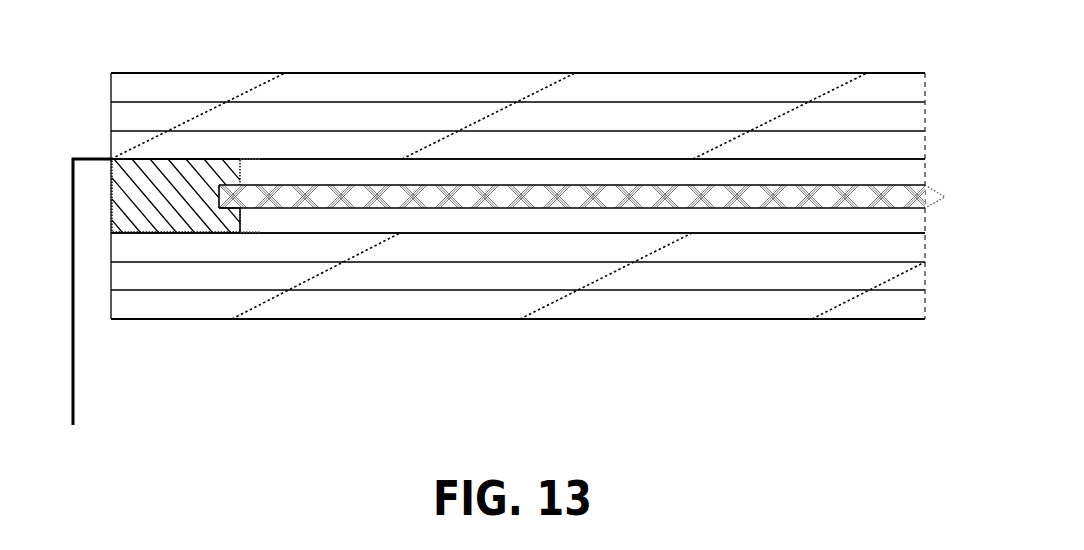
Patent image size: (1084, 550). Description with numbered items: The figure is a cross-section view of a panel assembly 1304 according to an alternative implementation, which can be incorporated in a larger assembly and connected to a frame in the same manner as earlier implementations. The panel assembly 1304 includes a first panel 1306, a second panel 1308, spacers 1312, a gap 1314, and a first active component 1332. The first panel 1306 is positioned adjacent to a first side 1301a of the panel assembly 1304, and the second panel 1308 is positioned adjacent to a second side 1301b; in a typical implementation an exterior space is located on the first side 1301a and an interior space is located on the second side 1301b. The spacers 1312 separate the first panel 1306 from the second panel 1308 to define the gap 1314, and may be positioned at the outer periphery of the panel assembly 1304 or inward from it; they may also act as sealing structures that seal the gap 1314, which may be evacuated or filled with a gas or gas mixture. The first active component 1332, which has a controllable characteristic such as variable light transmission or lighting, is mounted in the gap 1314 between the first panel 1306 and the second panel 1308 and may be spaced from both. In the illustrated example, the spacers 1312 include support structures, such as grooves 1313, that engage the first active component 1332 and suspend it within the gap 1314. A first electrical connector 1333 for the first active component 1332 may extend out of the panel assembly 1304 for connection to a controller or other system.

The panel assembly 1304 is at (147, 48).
The first panel 1306 is at (858, 73).
The second panel 1308 is at (855, 320).
The first side 1301a is at (817, 51).
The second side 1301b is at (817, 361).
The spacers 1312 is at (218, 159).
The first active component 1332 is at (330, 190).
The grooves 1313 is at (226, 208).
The gap 1314 is at (586, 172).
The first electrical connector 1333 is at (73, 385).